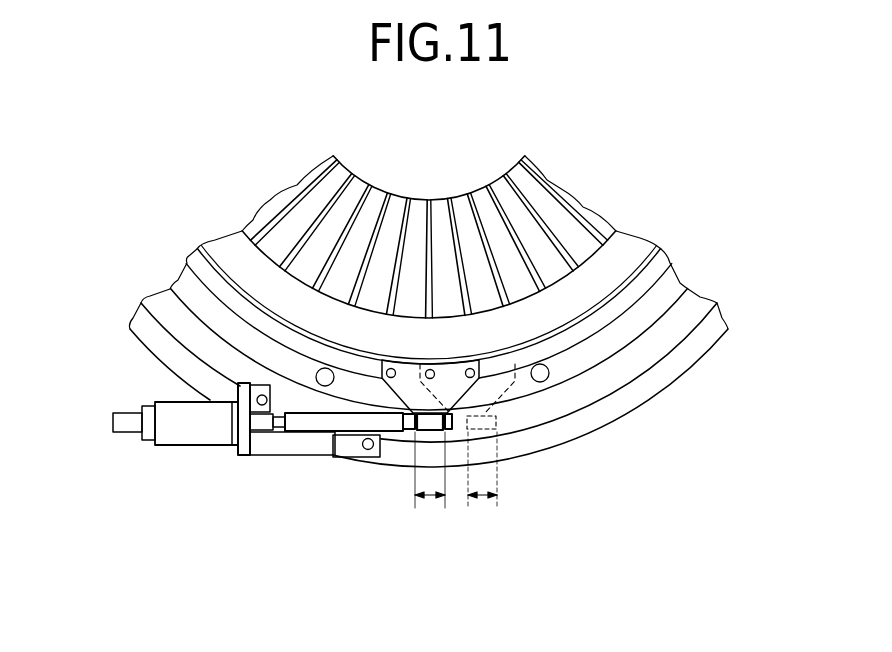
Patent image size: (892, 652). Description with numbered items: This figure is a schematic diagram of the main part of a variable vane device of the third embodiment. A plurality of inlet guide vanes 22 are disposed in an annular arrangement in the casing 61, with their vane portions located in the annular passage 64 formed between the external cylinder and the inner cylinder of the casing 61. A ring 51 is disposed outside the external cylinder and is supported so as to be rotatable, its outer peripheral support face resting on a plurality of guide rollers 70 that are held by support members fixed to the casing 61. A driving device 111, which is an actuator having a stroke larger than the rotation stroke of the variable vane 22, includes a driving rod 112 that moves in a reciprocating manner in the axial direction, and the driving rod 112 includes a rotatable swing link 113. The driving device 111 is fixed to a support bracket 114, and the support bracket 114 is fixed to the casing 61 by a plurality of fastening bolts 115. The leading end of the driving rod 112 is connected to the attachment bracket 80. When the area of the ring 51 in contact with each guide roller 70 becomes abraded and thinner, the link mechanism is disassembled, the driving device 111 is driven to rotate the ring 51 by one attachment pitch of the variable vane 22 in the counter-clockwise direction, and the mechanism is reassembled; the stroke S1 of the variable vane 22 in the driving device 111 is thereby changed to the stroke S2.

The inlet guide vane 22 is at (389, 210).
The annular passage 64 is at (467, 230).
The ring 51 is at (676, 308).
The casing 61 is at (695, 370).
The guide roller 70 is at (325, 372).
The attachment bracket 80 is at (413, 430).
The driving device 111 is at (181, 449).
The driving rod 112 is at (448, 432).
The swing link 113 is at (313, 426).
The support bracket 114 is at (288, 440).
The fastening bolt 115 is at (238, 388).
The stroke S1 is at (430, 482).
The stroke S2 is at (482, 482).